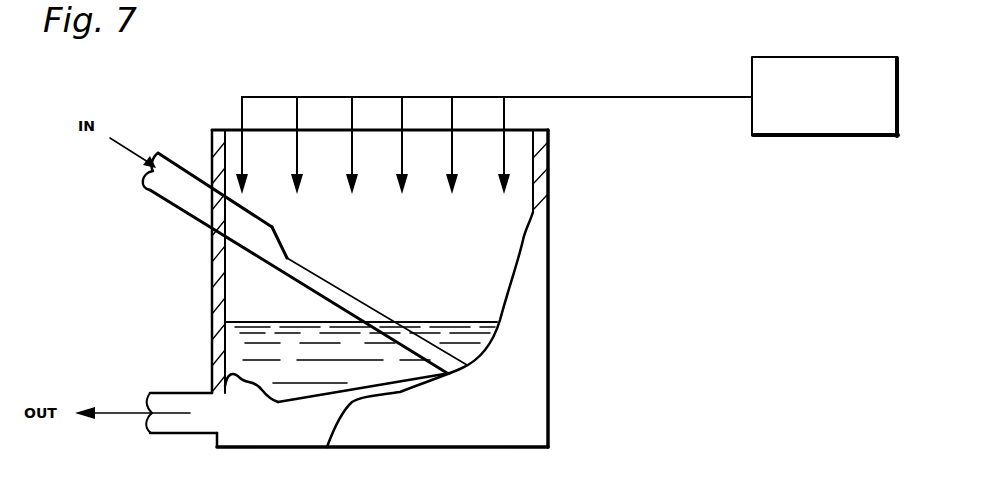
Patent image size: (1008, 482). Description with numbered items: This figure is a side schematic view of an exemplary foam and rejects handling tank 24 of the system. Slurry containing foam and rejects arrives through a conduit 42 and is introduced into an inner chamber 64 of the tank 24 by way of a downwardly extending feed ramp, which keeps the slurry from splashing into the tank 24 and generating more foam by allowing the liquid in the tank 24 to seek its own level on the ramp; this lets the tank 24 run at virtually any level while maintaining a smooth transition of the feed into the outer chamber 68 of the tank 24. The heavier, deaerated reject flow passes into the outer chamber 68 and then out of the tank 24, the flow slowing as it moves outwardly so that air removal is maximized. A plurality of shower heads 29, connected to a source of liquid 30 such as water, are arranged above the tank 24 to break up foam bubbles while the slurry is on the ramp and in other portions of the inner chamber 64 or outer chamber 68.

The foam and rejects handling tank 24 is at (176, 299).
The shower heads 29 is at (398, 108).
The source of liquid 30 is at (842, 57).
The conduit 42 is at (172, 168).
The inner chamber 64 is at (247, 333).
The outer chamber 68 is at (535, 347).